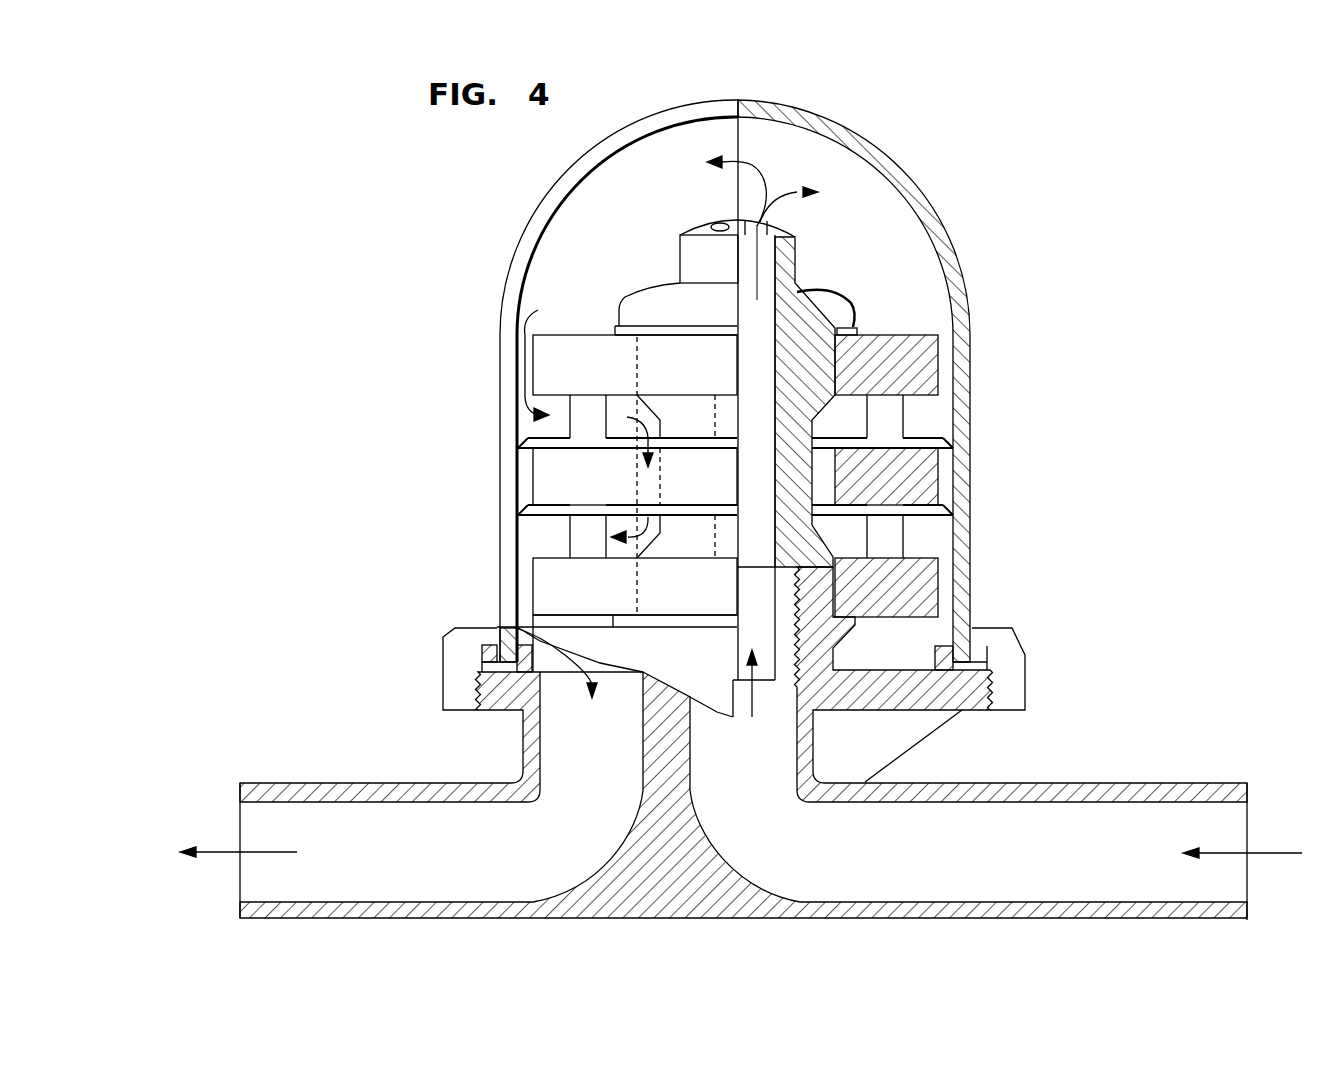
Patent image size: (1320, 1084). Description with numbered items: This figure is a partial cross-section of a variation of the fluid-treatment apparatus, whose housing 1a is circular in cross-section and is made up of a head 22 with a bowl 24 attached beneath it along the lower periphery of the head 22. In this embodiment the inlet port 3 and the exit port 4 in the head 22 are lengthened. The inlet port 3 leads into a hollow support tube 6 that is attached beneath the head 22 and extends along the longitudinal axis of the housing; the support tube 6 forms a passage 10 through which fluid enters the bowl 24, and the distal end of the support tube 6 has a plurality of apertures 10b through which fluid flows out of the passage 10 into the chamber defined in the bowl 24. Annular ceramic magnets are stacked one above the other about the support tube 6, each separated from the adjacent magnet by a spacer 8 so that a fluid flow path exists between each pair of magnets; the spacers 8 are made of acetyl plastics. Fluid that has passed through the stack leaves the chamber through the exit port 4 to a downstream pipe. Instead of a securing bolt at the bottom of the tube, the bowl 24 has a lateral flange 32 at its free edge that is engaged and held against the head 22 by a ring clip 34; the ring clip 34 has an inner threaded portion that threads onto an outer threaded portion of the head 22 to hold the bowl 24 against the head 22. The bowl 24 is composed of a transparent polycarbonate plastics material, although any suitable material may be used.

The casing cover 1a is at (500, 408).
The inlet port 3 is at (1290, 856).
The exit port 4 is at (240, 882).
The support tube 6 is at (813, 322).
The spacer 8 is at (888, 542).
The passage 10 is at (750, 477).
The apertures 10b is at (743, 227).
The head 22 is at (502, 700).
The bowl 24 is at (967, 372).
The lateral flange 32 is at (490, 652).
The ring clip 34 is at (1013, 685).